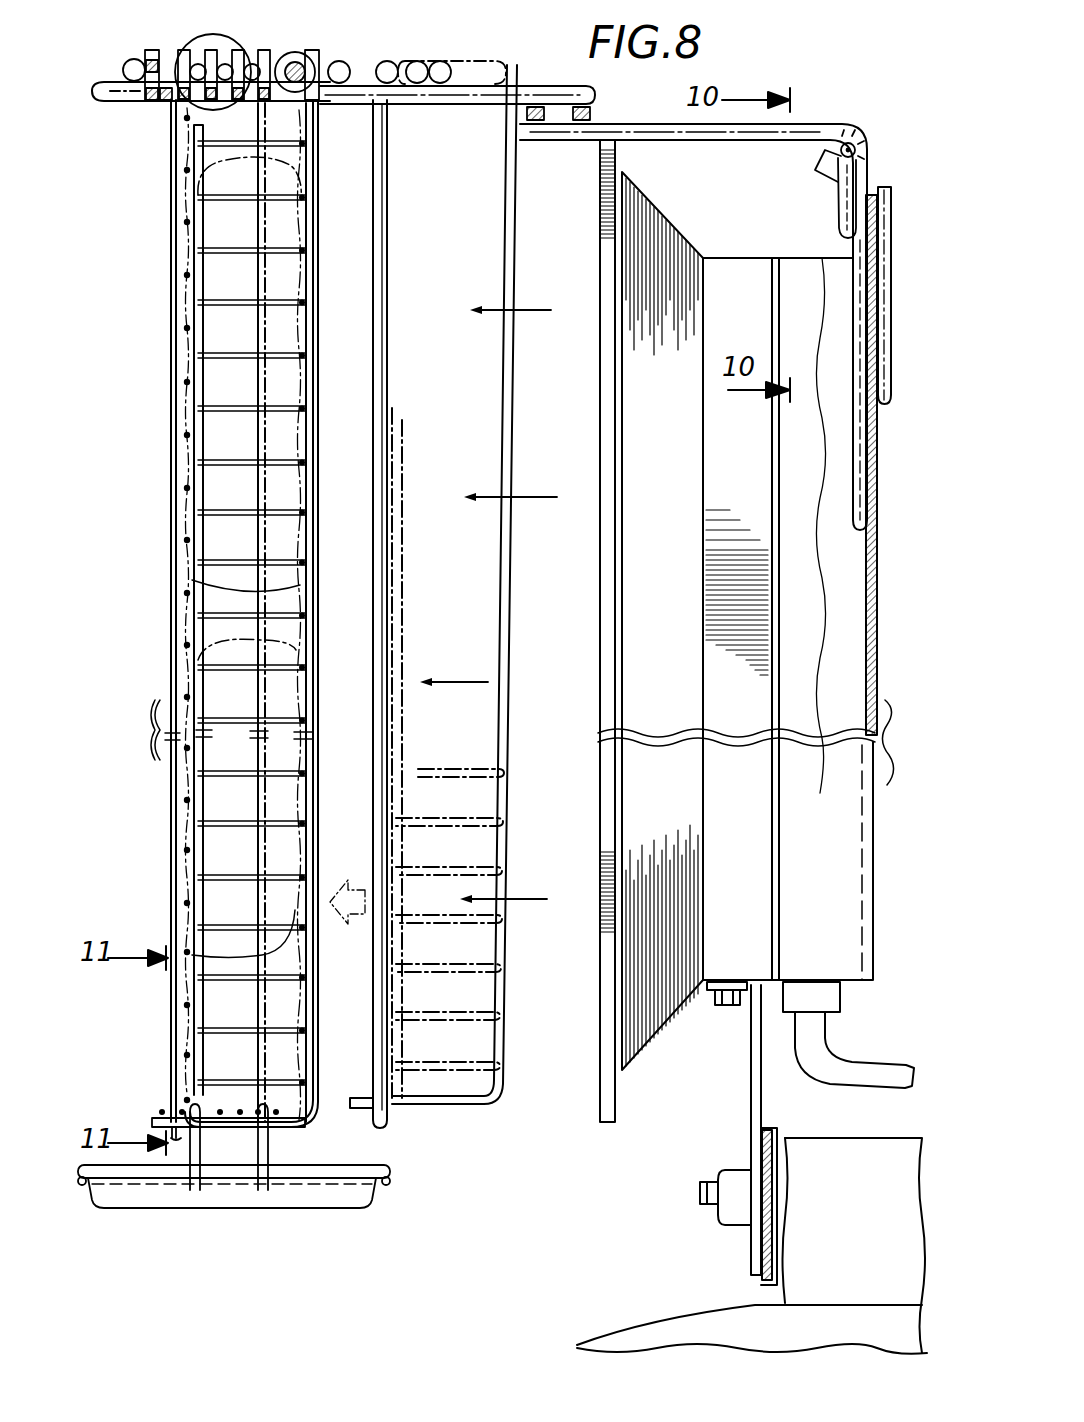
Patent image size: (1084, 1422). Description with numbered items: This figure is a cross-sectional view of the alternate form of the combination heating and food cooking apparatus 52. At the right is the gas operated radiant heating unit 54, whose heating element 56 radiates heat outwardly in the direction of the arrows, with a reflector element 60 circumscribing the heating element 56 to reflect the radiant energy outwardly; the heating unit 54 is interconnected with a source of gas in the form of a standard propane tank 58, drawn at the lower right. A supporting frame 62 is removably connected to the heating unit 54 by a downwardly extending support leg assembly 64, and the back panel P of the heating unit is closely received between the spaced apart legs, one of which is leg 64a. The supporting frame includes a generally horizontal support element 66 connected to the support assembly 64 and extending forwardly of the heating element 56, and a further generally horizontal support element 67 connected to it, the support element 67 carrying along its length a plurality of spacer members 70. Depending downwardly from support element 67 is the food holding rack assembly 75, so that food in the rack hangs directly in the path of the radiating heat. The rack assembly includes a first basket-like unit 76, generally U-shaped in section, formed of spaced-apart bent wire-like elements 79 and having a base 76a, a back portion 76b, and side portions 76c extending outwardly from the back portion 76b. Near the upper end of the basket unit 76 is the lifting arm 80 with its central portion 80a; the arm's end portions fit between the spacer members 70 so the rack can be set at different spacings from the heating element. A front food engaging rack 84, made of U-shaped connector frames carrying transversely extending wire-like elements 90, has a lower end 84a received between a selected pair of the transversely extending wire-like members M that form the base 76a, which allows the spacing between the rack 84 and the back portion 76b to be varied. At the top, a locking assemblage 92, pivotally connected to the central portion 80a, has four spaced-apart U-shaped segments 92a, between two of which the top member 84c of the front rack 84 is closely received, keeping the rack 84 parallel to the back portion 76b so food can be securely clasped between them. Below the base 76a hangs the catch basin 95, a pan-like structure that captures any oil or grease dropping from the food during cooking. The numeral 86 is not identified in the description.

The combination heating and food cooking apparatus 52 is at (435, 41).
The radiant heating unit 54 is at (790, 908).
The heating element 56 is at (600, 1030).
The propane tank 58 is at (682, 1328).
The reflector element 60 is at (672, 216).
The supporting frame 62 is at (848, 100).
The support leg assembly 64 is at (850, 435).
The leg 64a is at (866, 240).
The support element 66 is at (730, 140).
The support element 67 is at (450, 105).
The spacer member 70 is at (128, 66).
The food holding rack assembly 75 is at (204, 604).
The first basket-like unit 76 is at (333, 596).
The base 76a is at (268, 1095).
The back portion 76b is at (312, 824).
The side portion 76c is at (238, 344).
The wire-like element 79 is at (290, 350).
The lifting arm 80 is at (318, 77).
The central portion 80a is at (296, 60).
The front food engaging rack 84 is at (158, 428).
The lower end 84a is at (220, 1124).
The top member 84c is at (175, 82).
The side rail 86 is at (372, 598).
The wire-like element 90 is at (183, 275).
The locking assemblage 92 is at (150, 108).
The U-shaped segment 92a is at (238, 68).
The catch basin 95 is at (250, 1222).
The wire-like member M is at (236, 1108).
The back panel P is at (876, 514).